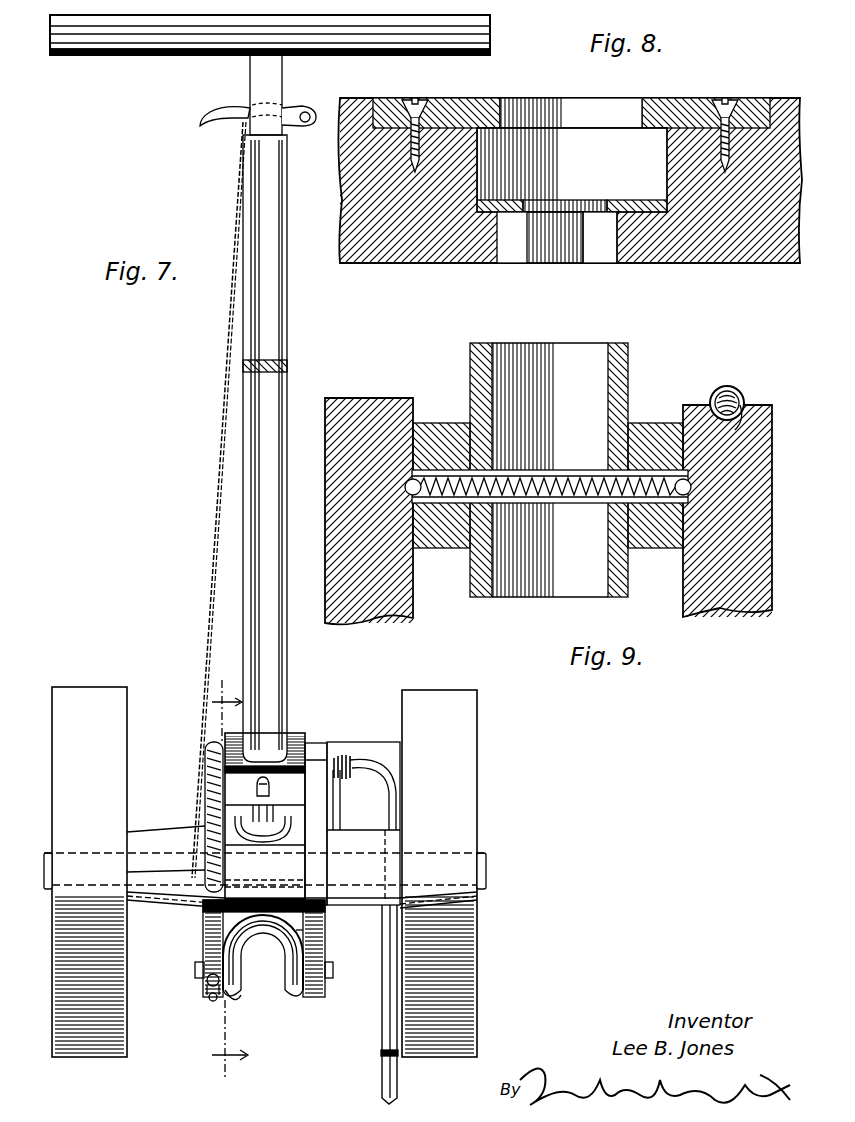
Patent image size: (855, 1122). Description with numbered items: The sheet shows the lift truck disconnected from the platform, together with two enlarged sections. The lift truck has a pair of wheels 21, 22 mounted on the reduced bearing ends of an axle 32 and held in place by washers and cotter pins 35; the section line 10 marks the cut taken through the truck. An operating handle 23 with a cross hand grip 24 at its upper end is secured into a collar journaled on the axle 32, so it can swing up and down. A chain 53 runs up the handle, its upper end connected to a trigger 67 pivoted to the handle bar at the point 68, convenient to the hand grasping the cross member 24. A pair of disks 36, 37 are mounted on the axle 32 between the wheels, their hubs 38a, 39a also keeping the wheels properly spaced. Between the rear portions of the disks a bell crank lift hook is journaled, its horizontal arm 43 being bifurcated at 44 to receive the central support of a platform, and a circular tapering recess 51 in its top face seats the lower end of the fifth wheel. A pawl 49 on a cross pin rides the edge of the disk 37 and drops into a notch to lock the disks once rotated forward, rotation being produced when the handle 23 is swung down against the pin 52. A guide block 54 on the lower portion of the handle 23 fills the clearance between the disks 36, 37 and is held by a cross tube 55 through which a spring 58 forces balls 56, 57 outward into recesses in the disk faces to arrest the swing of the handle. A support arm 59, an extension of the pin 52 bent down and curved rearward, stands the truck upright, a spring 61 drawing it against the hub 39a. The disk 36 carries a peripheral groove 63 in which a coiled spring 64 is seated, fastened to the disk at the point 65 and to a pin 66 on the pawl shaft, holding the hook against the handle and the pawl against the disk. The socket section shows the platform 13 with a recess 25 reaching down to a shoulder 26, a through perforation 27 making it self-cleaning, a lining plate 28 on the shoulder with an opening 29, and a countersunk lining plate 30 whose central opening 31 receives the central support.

In FIG. 7, the cross hand grip 24 is at (178, 55).
In FIG. 7, the operating handle 23 is at (287, 666).
In FIG. 7, the trigger 67 is at (230, 120).
In FIG. 7, the pivot point 68 is at (310, 110).
In FIG. 7, the chain 53 is at (212, 585).
In FIG. 7, the wheel 21 is at (97, 690).
In FIG. 7, the wheel 22 is at (478, 732).
In FIG. 7, the cotter pin 35 is at (46, 853).
In FIG. 7, the axle 32 is at (487, 870).
In FIG. 7, the section line 10 is at (230, 880).
In FIG. 7, the guide block 54 is at (283, 770).
In FIG. 7, the pawl 49 is at (335, 820).
In FIG. 7, the pin 52 is at (343, 757).
In FIG. 7, the spring 61 is at (365, 766).
In FIG. 7, the coiled spring 64 is at (205, 795).
In FIG. 9, the coiled spring 64 is at (738, 392).
In FIG. 7, the hub 38a is at (190, 822).
In FIG. 7, the pin 66 is at (190, 918).
In FIG. 7, the disk 36 is at (203, 950).
In FIG. 9, the disk 36 is at (745, 595).
In FIG. 7, the disk 37 is at (325, 983).
In FIG. 9, the disk 37 is at (402, 608).
In FIG. 7, the bifurcation 44 is at (268, 945).
In FIG. 7, the horizontal arm 43 is at (243, 996).
In FIG. 7, the point 65 is at (196, 976).
In FIG. 7, the hub 39a is at (338, 958).
In FIG. 7, the circular tapering recess 51 is at (305, 940).
In FIG. 7, the support arm 59 is at (382, 1080).
In FIG. 8, the platform 13 is at (734, 260).
In FIG. 8, the lining plate 30 is at (472, 104).
In FIG. 8, the central opening 31 is at (615, 110).
In FIG. 8, the recess 25 is at (667, 172).
In FIG. 8, the lining plate 28 is at (540, 192).
In FIG. 8, the shoulder 26 is at (500, 215).
In FIG. 8, the opening 29 is at (578, 215).
In FIG. 8, the through perforation 27 is at (612, 242).
In FIG. 9, the ball 57 is at (418, 498).
In FIG. 9, the ball 56 is at (678, 498).
In FIG. 9, the spring 58 is at (575, 470).
In FIG. 9, the cross tube 55 is at (590, 503).
In FIG. 9, the peripheral groove 63 is at (750, 413).